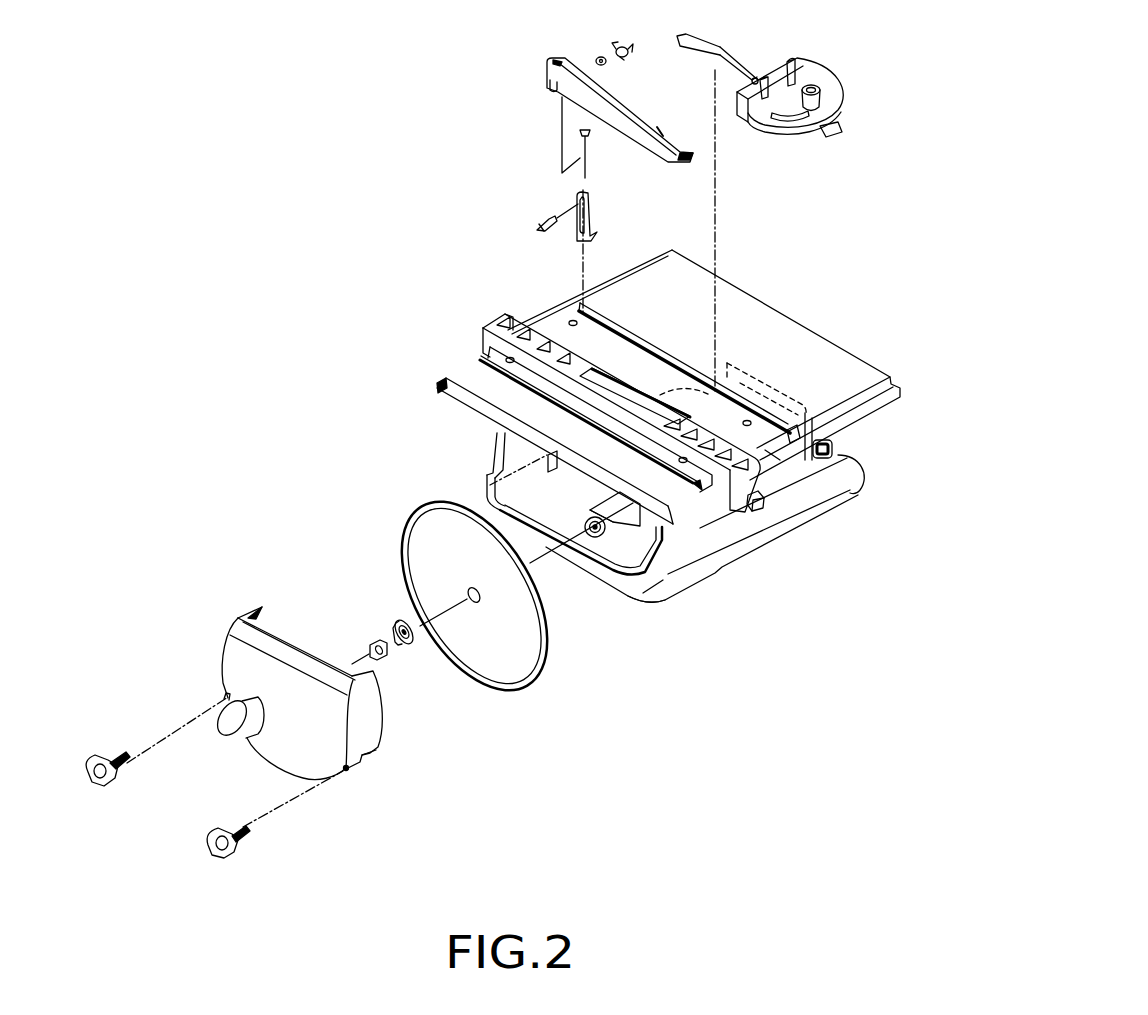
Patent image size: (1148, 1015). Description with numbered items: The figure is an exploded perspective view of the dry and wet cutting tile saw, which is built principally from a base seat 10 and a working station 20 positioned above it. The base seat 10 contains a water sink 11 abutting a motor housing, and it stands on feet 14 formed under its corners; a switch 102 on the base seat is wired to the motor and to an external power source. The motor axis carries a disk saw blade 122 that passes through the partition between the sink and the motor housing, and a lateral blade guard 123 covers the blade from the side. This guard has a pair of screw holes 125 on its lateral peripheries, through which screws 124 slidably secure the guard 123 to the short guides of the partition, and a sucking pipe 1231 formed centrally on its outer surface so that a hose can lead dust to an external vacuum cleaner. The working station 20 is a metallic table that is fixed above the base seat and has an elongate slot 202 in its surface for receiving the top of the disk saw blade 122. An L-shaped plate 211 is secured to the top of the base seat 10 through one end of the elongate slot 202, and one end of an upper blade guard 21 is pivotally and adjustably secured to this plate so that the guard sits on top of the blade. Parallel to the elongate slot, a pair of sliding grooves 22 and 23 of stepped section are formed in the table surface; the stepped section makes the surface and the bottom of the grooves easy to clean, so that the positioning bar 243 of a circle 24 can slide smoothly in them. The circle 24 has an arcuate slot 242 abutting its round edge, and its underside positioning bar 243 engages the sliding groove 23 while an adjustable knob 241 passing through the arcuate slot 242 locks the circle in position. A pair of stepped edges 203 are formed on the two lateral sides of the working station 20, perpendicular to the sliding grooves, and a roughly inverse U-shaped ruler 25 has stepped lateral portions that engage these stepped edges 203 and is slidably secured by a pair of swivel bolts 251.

The base seat 10 is at (743, 583).
The water sink 11 is at (627, 537).
The base bottom foot 14 is at (667, 598).
The working station 20 is at (767, 287).
The upper blade guard 21 is at (563, 78).
The sliding groove 22 is at (533, 397).
The sliding groove 23 is at (670, 357).
The circle 24 is at (803, 70).
The ruler 25 is at (490, 320).
The switch 102 is at (832, 449).
The disk saw blade 122 is at (507, 682).
The lateral blade guard 123 is at (367, 728).
The knob screw 124 is at (237, 837).
The screw holes 125 is at (349, 769).
The elongate slot 202 is at (613, 375).
The stepped edges 203 is at (773, 457).
The L-shaped plate 211 is at (573, 197).
The adjustable knob 241 is at (817, 100).
The arcuate slot 242 is at (784, 118).
The positioning bar 243 is at (703, 53).
The swivel bolts 251 is at (760, 507).
The sucking pipe 1231 is at (230, 727).